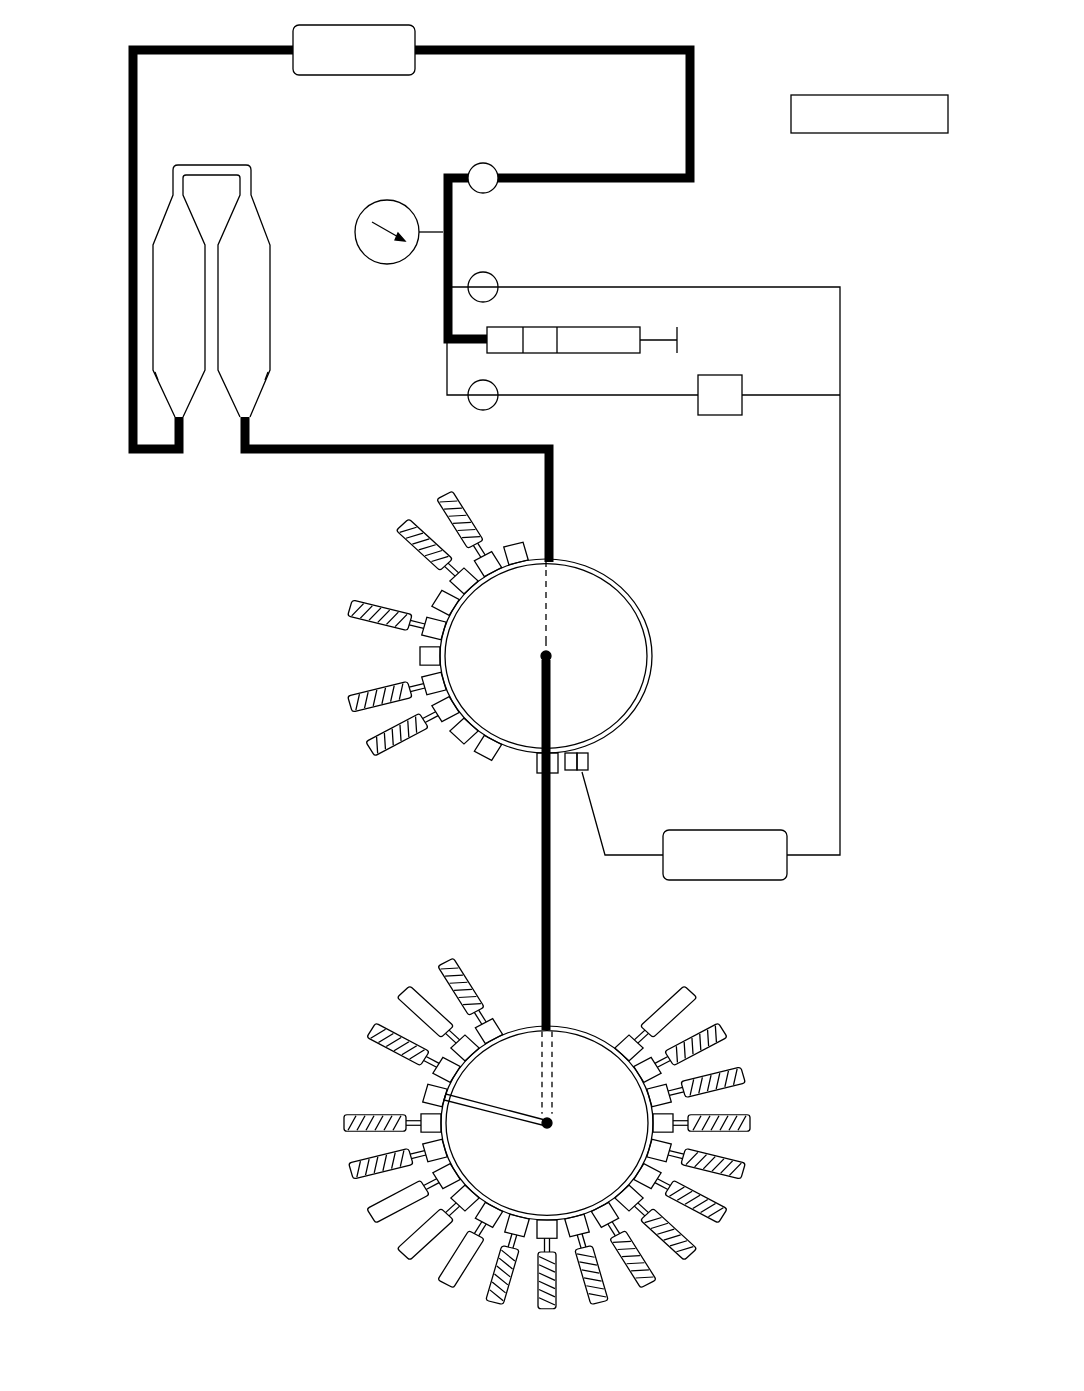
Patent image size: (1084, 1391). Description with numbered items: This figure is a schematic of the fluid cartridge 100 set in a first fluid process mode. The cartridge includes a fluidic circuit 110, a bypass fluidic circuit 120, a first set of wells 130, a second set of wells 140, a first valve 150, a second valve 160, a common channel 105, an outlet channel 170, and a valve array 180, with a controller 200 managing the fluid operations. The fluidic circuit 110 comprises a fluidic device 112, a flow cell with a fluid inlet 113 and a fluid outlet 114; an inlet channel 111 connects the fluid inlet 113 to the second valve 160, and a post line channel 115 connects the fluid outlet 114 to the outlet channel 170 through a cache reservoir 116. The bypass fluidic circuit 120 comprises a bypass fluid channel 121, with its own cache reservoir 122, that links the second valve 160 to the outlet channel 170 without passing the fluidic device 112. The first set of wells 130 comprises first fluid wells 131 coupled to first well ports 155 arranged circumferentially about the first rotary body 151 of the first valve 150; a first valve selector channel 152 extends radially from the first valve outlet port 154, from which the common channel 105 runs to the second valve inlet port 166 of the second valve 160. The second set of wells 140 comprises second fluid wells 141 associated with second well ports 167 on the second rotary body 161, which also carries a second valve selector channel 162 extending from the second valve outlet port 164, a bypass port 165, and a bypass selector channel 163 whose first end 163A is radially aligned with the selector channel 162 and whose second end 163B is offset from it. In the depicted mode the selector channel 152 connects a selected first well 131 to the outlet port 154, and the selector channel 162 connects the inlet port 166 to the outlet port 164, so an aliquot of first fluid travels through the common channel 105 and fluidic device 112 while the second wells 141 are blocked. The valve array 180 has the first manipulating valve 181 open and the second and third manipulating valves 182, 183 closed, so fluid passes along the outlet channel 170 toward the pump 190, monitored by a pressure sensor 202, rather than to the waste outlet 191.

The fluid cartridge 100 is at (790, 46).
The common channel 105 is at (556, 905).
The fluidic circuit 110 is at (180, 490).
The inlet channel 111 is at (556, 466).
The fluidic device 112 is at (243, 232).
The fluid inlet 113 is at (247, 385).
The fluid outlet 114 is at (170, 383).
The post line channel 115 is at (128, 192).
The cache reservoir 116 is at (360, 25).
The bypass fluidic circuit 120 is at (863, 518).
The bypass fluid channel 121 is at (841, 624).
The cache reservoir 122 is at (732, 830).
The first set of wells 130 is at (802, 925).
The first fluid wells 131 is at (345, 1035).
The second set of wells 140 is at (218, 806).
The second fluid wells 141 is at (432, 512).
The first valve 150 is at (536, 1020).
The first rotary body 151 is at (612, 1185).
The first valve selector channel 152 is at (522, 1118).
The first valve outlet port 154 is at (553, 1122).
The first well ports 155 is at (470, 1033).
The second valve 160 is at (640, 610).
The second rotary body 161 is at (645, 658).
The second valve selector channel 162 is at (558, 708).
The bypass selector channel 163 is at (535, 582).
The first end of bypass selector channel 163A is at (548, 564).
The second end of bypass selector channel 163B is at (522, 578).
The second valve outlet port 164 is at (553, 652).
The bypass port 165 is at (590, 765).
The second valve inlet port 166 is at (540, 778).
The second well ports 167 is at (517, 545).
The outlet channel 170 is at (443, 270).
The valve array 180 is at (466, 157).
The first manipulating valve 181 is at (484, 163).
The second manipulating valve 182 is at (484, 272).
The third manipulating valve 183 is at (483, 410).
The pump 190 is at (682, 340).
The waste outlet 191 is at (742, 395).
The controller 200 is at (875, 95).
The pressure sensor 202 is at (385, 200).